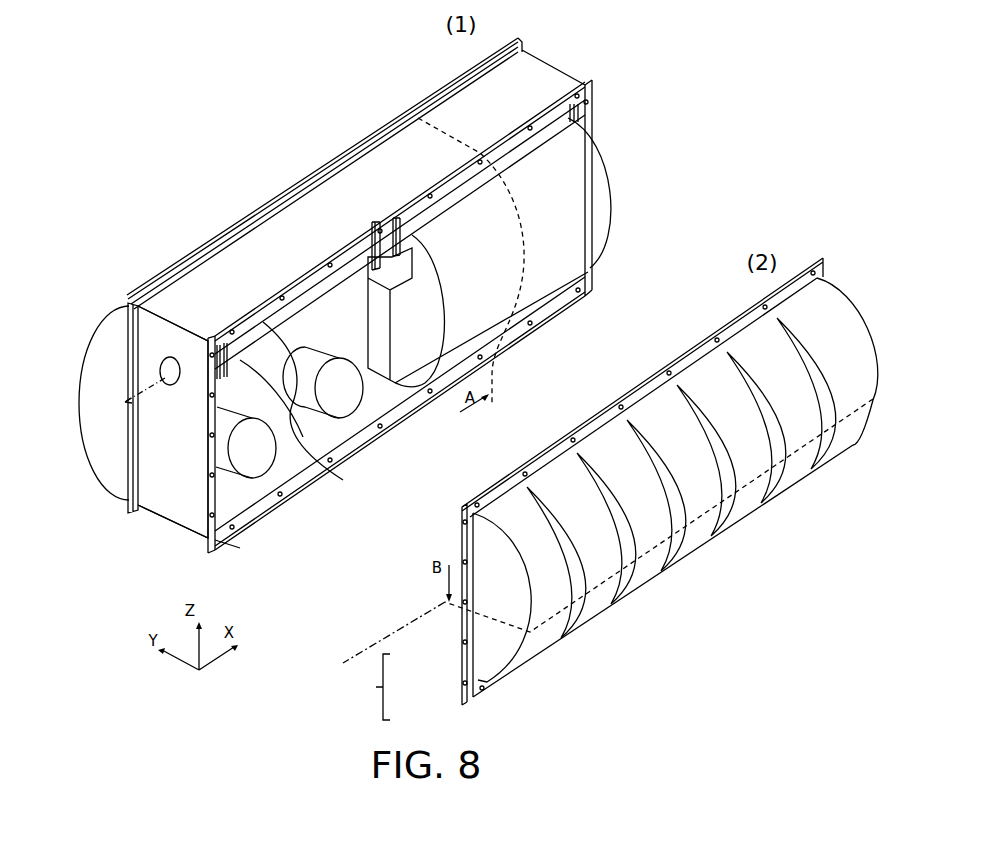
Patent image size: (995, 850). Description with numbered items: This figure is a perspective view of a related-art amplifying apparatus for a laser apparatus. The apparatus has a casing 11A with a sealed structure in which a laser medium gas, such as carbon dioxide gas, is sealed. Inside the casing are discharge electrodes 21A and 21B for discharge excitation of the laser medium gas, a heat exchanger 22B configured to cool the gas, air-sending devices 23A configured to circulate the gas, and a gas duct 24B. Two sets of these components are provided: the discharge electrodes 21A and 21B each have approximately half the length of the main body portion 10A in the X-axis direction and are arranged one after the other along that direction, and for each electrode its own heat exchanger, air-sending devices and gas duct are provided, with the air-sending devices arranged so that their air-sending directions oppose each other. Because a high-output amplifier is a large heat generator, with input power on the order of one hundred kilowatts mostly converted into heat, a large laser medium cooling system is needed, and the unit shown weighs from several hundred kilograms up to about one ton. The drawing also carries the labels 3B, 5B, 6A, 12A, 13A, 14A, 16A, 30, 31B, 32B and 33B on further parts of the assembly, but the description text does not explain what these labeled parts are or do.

The second unit housing 3B is at (622, 405).
The center axis line 5B is at (365, 643).
The hole 6A is at (125, 402).
The main body portion 10A is at (150, 345).
The casing 11A is at (173, 502).
The top plate 12A is at (170, 303).
The bottom plate 13A is at (240, 497).
The front frame 14A is at (555, 305).
The frame rail 16A is at (532, 323).
The discharge electrode 21A is at (323, 468).
The discharge electrode 21B is at (396, 220).
The heat exchanger 22B is at (410, 390).
The air-sending device 23A is at (365, 410).
The gas duct 24B is at (594, 184).
The cover 30 is at (108, 423).
The outer cover 31B is at (540, 642).
The end cap 32B is at (490, 643).
The flange 33B is at (467, 622).